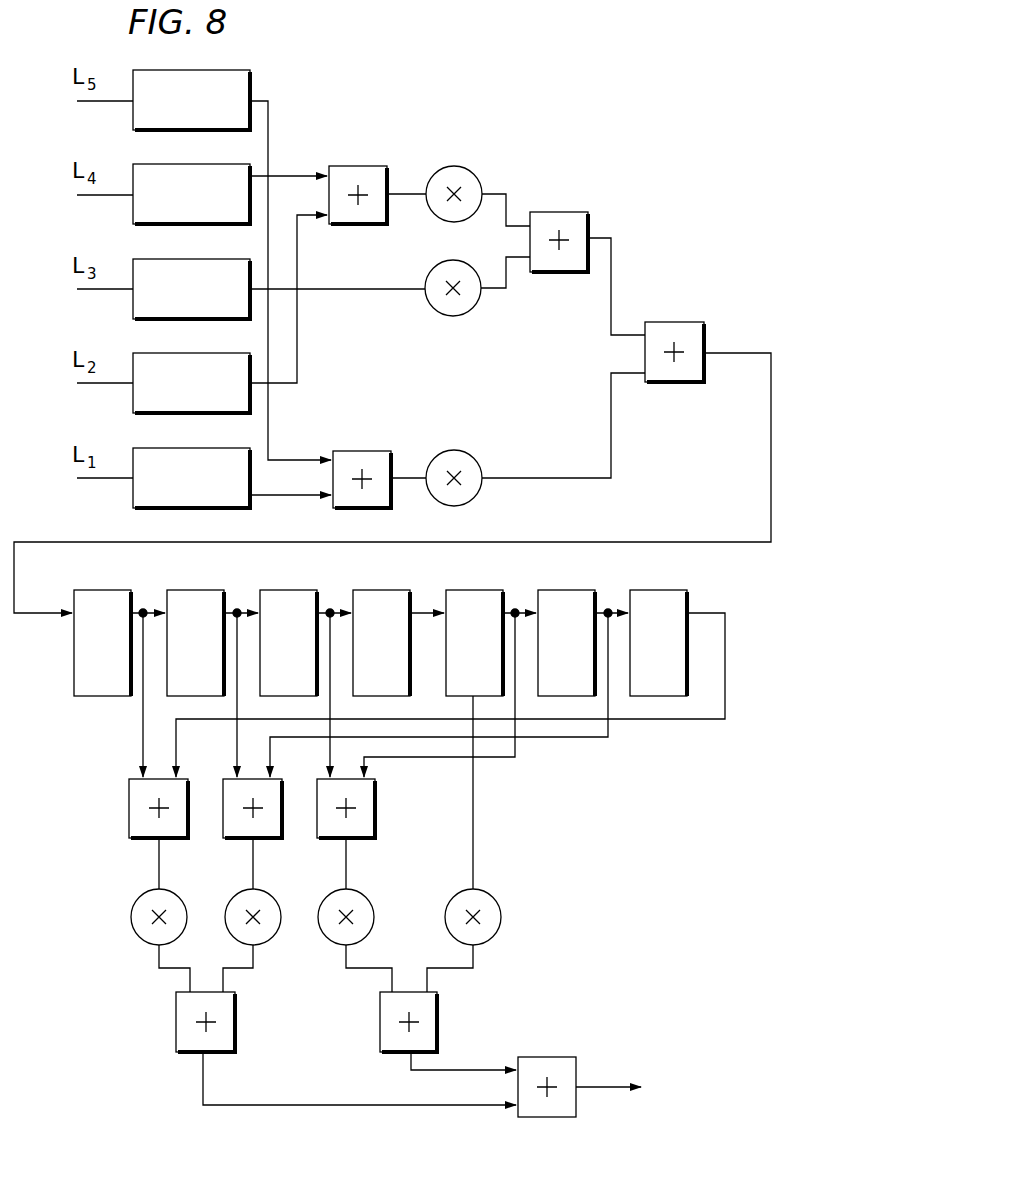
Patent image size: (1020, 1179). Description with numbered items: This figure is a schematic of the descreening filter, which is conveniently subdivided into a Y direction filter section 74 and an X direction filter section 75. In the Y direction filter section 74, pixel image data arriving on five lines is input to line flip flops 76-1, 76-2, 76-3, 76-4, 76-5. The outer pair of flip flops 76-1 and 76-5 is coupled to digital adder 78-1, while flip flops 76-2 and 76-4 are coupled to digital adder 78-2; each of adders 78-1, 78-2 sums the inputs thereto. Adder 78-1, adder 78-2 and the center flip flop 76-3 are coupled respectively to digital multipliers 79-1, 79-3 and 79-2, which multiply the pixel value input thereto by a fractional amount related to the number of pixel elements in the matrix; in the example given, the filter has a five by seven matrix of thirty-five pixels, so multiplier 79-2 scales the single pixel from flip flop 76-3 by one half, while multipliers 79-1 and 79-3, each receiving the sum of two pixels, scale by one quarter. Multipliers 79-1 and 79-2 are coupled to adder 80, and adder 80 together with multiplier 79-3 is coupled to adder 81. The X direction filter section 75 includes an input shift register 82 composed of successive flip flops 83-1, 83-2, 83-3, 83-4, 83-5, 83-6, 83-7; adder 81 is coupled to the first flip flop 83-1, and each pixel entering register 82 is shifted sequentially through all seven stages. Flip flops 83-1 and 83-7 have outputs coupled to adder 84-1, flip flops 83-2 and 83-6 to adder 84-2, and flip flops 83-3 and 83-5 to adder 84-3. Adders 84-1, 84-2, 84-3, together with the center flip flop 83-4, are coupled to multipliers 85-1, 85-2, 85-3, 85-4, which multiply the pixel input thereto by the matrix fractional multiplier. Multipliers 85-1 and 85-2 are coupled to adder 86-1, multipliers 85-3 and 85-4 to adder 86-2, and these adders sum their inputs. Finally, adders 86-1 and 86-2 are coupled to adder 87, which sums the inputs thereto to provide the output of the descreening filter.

The Y direction filter section 74 is at (657, 212).
The X direction filter section 75 is at (616, 779).
The line flip flop 76-1 is at (166, 491).
The line flip flop 76-2 is at (166, 396).
The line flip flop 76-3 is at (166, 302).
The line flip flop 76-4 is at (166, 207).
The line flip flop 76-5 is at (166, 113).
The digital adder 78-1 is at (374, 451).
The digital adder 78-2 is at (373, 166).
The digital multiplier 79-1 is at (489, 426).
The digital multiplier 79-2 is at (487, 255).
The digital multiplier 79-3 is at (487, 154).
The adder 80 is at (588, 216).
The adder 81 is at (704, 322).
The input shift register 82 is at (708, 593).
The flip flop 83-1 is at (82, 631).
The flip flop 83-2 is at (175, 631).
The flip flop 83-3 is at (268, 631).
The flip flop 83-4 is at (361, 631).
The flip flop 83-5 is at (454, 631).
The flip flop 83-6 is at (546, 631).
The flip flop 83-7 is at (638, 631).
The adder 84-1 is at (131, 781).
The adder 84-2 is at (224, 824).
The adder 84-3 is at (440, 784).
The multiplier 85-1 is at (136, 905).
The multiplier 85-2 is at (326, 883).
The multiplier 85-3 is at (430, 883).
The multiplier 85-4 is at (560, 883).
The adder 86-1 is at (304, 996).
The adder 86-2 is at (522, 996).
The adder 87 is at (576, 1058).